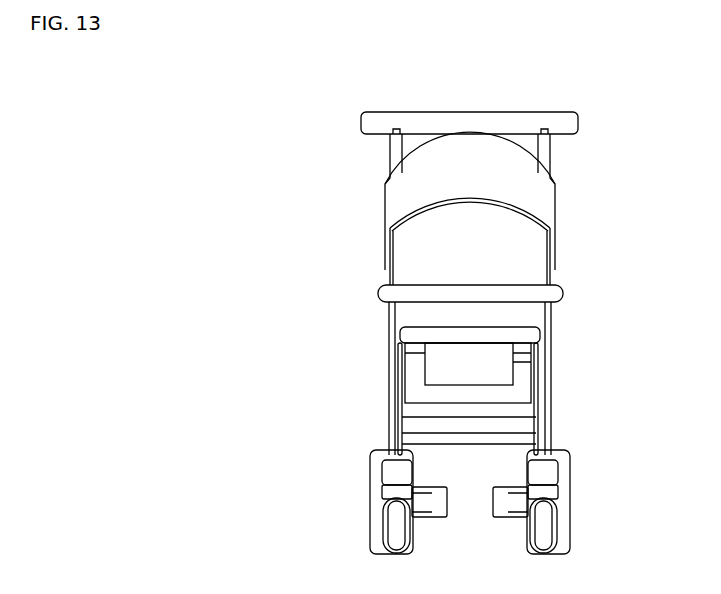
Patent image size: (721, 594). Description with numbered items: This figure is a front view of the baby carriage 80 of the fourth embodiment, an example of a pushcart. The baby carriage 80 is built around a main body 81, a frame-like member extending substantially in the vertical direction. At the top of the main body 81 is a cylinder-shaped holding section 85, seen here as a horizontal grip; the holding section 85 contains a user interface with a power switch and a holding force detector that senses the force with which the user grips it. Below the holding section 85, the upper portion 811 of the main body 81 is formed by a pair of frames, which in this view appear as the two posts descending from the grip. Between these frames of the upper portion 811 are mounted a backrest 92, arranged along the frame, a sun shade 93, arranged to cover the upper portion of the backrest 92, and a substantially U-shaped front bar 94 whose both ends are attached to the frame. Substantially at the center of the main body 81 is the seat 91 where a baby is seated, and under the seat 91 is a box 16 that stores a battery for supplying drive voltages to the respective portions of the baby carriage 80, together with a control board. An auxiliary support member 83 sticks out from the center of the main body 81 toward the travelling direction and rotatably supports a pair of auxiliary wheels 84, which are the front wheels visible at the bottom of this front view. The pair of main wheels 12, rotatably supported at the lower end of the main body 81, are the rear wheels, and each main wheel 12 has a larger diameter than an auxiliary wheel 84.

The baby carriage 80 is at (587, 95).
The holding section 85 is at (580, 121).
The main body 81 is at (469, 156).
The upper portion of the main body 811 is at (392, 151).
The sun shade 93 is at (542, 200).
The backrest 92 is at (537, 253).
The front bar 94 is at (566, 292).
The seat 91 is at (532, 338).
The box 16 is at (503, 362).
The auxiliary support member 83 is at (390, 423).
The main wheels 12 is at (370, 506).
The auxiliary wheels 84 is at (396, 535).